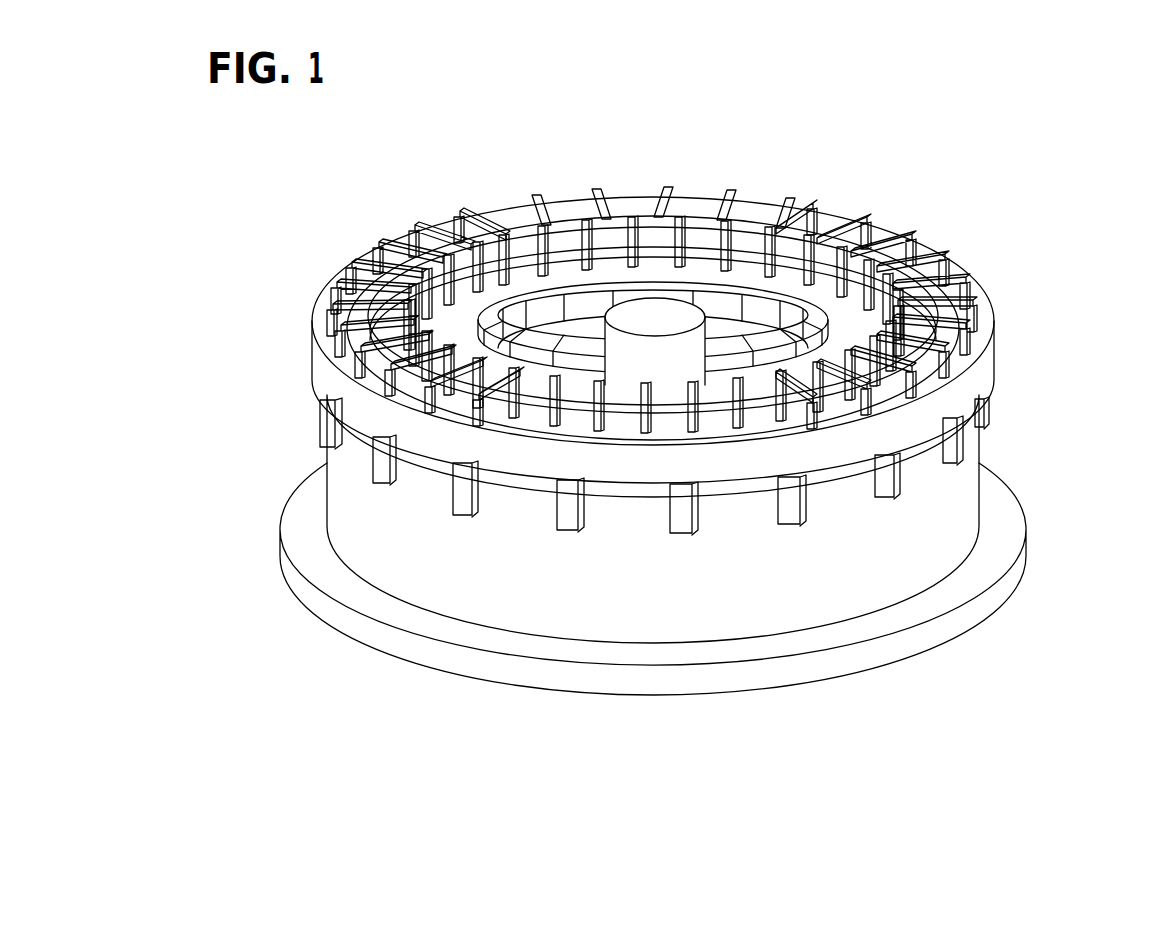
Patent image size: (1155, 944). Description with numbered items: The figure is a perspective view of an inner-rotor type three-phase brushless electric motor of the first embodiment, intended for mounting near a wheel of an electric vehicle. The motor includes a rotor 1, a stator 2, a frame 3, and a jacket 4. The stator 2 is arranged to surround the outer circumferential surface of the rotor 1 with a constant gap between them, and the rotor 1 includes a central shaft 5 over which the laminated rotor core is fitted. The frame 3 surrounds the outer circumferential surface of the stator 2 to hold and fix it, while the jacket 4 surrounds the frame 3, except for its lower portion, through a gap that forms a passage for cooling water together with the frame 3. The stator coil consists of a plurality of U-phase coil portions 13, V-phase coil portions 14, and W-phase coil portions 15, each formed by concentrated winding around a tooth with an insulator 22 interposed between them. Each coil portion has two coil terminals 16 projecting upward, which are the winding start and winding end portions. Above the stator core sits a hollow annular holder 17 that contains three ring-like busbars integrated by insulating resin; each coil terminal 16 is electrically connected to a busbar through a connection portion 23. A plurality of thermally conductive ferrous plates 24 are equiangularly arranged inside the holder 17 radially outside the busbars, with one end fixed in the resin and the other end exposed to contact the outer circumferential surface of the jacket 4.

The rotor 1 is at (837, 272).
The stator 2 is at (712, 273).
The frame 3 is at (988, 547).
The jacket 4 is at (940, 517).
The shaft 5 is at (653, 317).
The U-phase coil portion 13 is at (360, 283).
The V-phase coil portion 14 is at (467, 317).
The W-phase coil portion 15 is at (507, 293).
The coil terminal 16 is at (563, 283).
The holder 17 is at (982, 369).
The insulator 22 is at (750, 257).
The connection portion 23 is at (685, 197).
The plate 24 is at (567, 508).